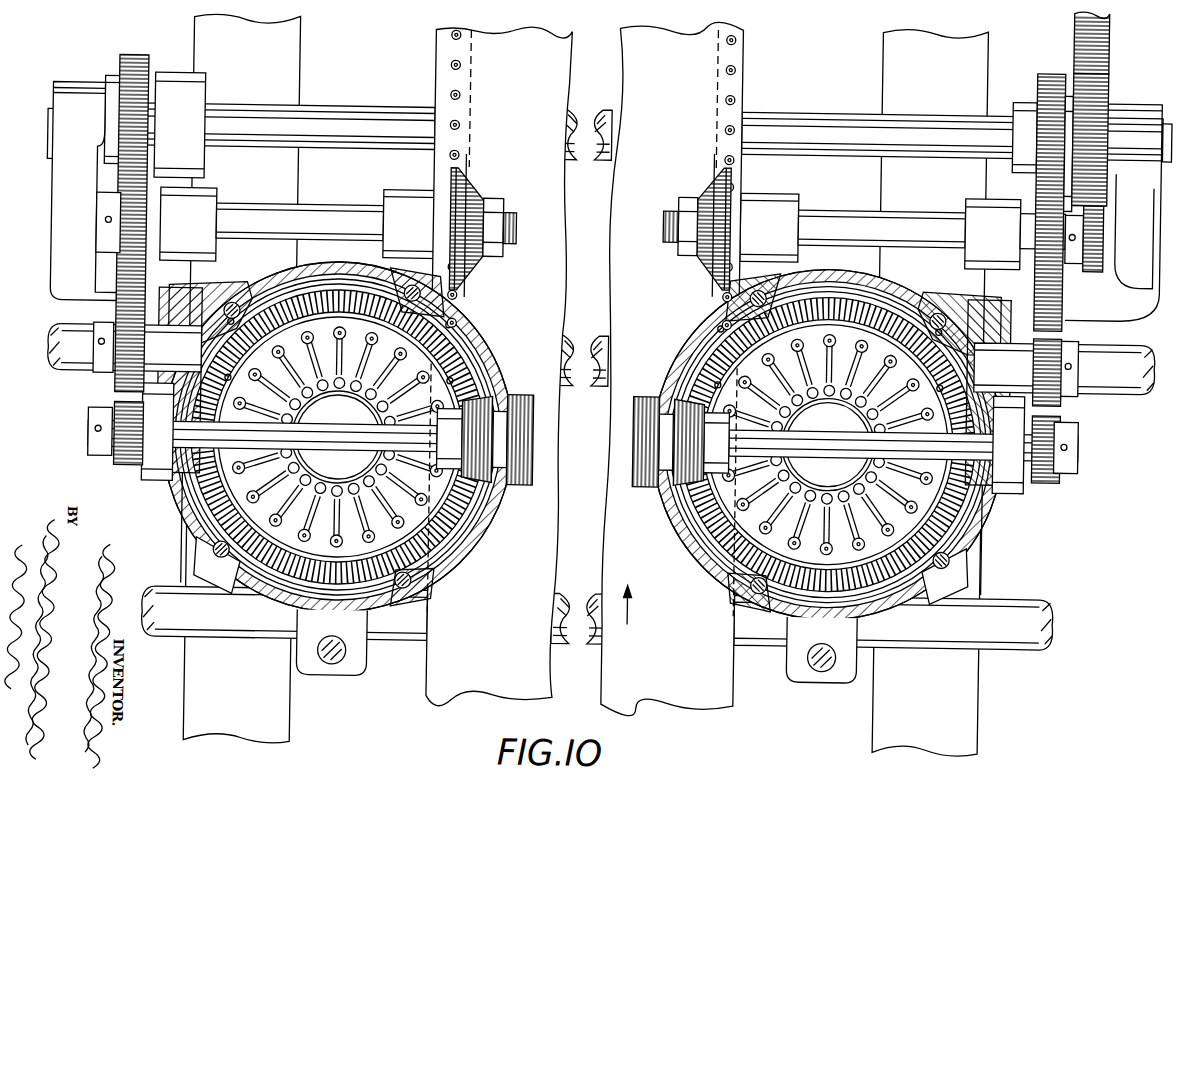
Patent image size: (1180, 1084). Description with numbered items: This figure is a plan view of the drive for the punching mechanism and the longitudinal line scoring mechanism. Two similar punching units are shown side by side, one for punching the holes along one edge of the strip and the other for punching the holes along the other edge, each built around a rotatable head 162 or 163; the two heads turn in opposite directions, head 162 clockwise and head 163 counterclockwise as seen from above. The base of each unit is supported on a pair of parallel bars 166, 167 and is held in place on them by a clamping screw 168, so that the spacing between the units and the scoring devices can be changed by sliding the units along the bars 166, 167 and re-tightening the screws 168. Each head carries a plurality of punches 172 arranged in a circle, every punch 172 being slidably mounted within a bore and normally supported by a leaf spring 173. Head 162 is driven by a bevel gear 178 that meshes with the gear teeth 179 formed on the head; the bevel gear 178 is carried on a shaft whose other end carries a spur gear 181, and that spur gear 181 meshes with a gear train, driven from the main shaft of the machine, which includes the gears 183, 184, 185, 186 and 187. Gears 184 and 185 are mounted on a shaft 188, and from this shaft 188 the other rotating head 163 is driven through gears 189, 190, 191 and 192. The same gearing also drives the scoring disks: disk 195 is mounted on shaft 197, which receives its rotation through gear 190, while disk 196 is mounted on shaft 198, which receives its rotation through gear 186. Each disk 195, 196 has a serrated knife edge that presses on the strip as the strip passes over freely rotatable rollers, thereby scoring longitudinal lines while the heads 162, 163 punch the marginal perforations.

The rotatable head 162 is at (765, 530).
The rotatable head 163 is at (440, 507).
The parallel bar 166 is at (1012, 622).
The parallel bar 167 is at (1104, 366).
The clamping screw 168 is at (338, 664).
The punch 172 is at (981, 531).
The leaf spring 173 is at (748, 503).
The bevel gear 178 is at (676, 392).
The gear teeth 179 is at (978, 497).
The spur gear 181 is at (1050, 468).
The gear 183 is at (1068, 24).
The gear 184 is at (1104, 80).
The gear 185 is at (1032, 70).
The gear 186 is at (1060, 283).
The gear 187 is at (1050, 338).
The shaft 188 is at (795, 111).
The gear 189 is at (114, 72).
The gear 190 is at (128, 228).
The gear 191 is at (128, 362).
The gear 192 is at (117, 467).
The disk 195 is at (466, 170).
The disk 196 is at (706, 166).
The shaft 197 is at (330, 214).
The shaft 198 is at (822, 206).